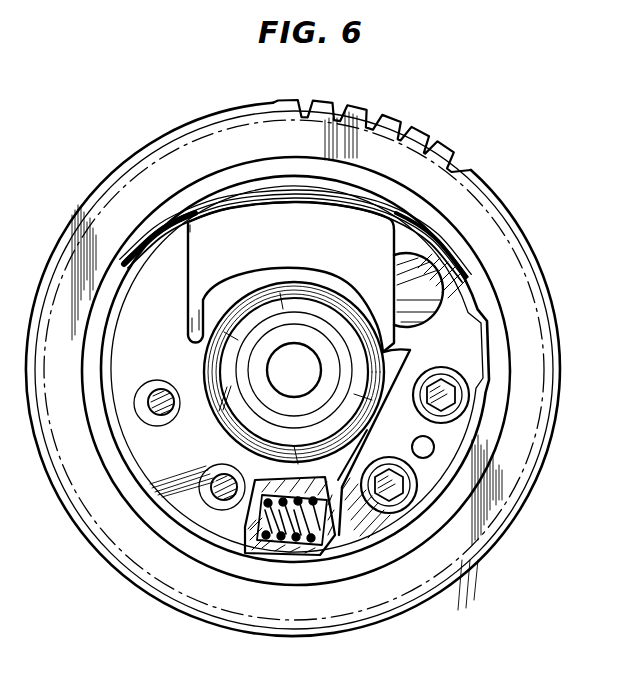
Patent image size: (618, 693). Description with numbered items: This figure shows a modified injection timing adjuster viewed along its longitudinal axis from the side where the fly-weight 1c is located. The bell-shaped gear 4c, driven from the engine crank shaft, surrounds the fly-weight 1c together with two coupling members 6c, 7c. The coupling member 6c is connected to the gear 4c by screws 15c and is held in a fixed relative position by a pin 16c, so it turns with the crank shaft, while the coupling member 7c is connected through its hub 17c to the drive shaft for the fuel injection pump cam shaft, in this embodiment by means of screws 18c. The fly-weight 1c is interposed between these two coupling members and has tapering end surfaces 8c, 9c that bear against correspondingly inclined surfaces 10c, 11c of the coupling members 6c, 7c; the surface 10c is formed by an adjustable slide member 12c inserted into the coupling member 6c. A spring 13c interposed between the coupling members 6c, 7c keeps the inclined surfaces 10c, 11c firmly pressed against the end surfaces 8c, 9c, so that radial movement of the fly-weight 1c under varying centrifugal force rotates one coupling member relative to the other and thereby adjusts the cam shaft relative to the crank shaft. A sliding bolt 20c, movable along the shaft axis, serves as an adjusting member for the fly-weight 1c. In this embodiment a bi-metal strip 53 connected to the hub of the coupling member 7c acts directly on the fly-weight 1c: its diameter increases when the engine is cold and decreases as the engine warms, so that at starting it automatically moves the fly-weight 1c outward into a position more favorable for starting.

The fly-weight 1c is at (362, 232).
The gear 4c is at (443, 573).
The coupling member 6c is at (463, 310).
The coupling member 7c is at (210, 528).
The tapering end surface 8c is at (433, 233).
The tapering end surface 9c is at (187, 225).
The inclined surface 10c is at (390, 291).
The inclined surface 11c is at (187, 288).
The adjustable slide member 12c is at (430, 270).
The spring 13c is at (330, 545).
The screws 15c is at (444, 396).
The pin 16c is at (427, 455).
The hub 17c is at (293, 305).
The screws 18c is at (212, 478).
The sliding bolt 20c is at (303, 385).
The bi-metal strip 53 is at (383, 360).